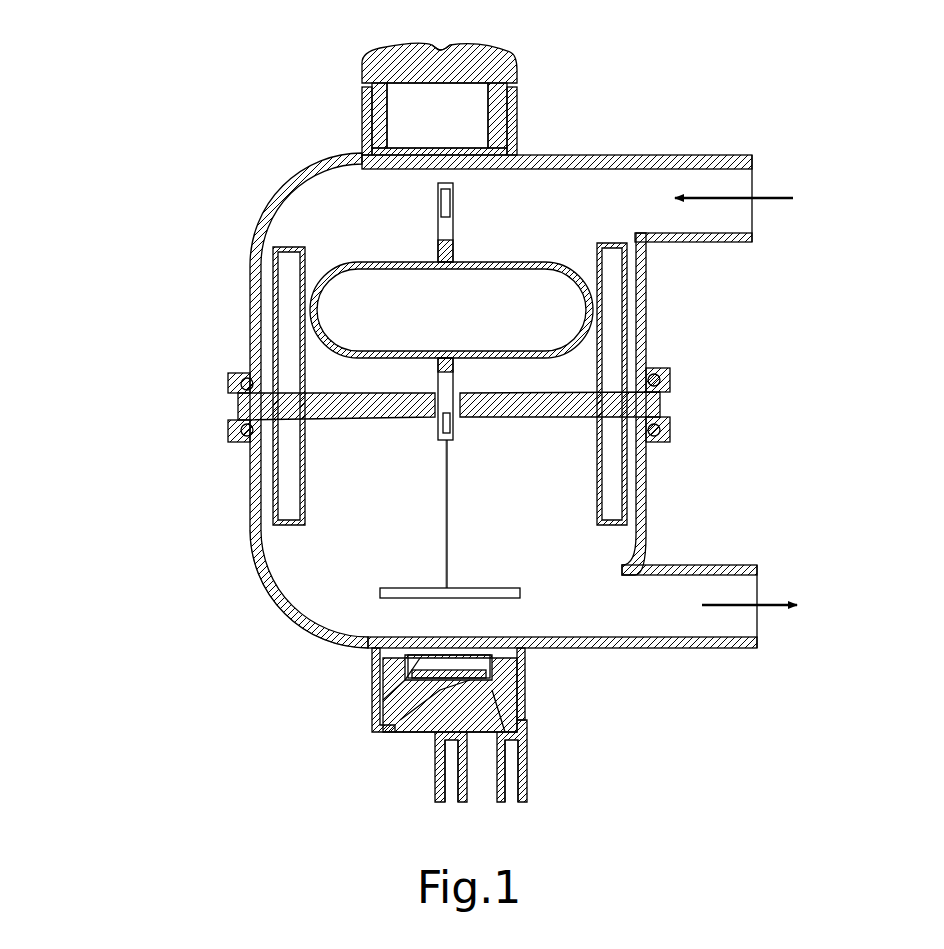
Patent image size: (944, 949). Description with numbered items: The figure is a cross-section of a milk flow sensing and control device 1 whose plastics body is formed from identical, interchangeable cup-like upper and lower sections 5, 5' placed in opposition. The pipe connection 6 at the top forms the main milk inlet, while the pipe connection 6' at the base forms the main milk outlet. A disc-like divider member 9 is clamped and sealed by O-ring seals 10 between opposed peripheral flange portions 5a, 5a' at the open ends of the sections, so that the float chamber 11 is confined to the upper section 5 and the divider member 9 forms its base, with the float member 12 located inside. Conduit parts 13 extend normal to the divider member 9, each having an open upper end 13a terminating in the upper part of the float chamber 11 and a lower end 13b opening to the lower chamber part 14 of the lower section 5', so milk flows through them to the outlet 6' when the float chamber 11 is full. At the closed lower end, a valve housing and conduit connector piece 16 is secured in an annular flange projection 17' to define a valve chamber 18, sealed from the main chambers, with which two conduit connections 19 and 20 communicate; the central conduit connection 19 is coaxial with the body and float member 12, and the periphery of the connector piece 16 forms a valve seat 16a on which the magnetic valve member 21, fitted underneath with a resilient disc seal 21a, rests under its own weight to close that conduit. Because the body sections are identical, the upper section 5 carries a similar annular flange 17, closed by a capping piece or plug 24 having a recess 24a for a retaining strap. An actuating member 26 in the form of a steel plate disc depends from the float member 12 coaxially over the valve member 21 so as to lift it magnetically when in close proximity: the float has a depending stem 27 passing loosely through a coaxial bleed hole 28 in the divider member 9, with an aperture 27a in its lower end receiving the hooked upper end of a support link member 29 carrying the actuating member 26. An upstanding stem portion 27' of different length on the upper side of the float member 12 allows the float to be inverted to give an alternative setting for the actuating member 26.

The sensor and control device 1 is at (325, 660).
The upper section 5 is at (503, 393).
The lower section 5' is at (300, 589).
The peripheral flange portion 5a is at (453, 363).
The peripheral flange portion 5a' is at (457, 446).
The pipe connection 6 is at (714, 171).
The pipe connection 6' is at (709, 635).
The divider member 9 is at (566, 390).
The O-ring seal 10 is at (249, 378).
The float chamber 11 is at (556, 218).
The float member 12 is at (494, 265).
The conduit part 13 is at (278, 312).
The open upper end 13a is at (296, 247).
The lower end 13b is at (280, 527).
The lower chamber part 14 is at (550, 568).
The valve housing and conduit connector piece 16 is at (425, 738).
The valve seat 16a is at (432, 690).
The annular outer concentric flange 17 is at (406, 121).
The annular flange projection 17' is at (423, 690).
The valve chamber 18 is at (388, 732).
The conduit connection 19 is at (450, 780).
The conduit connection 20 is at (510, 785).
The valve member 21 is at (528, 690).
The resilient disc seal 21a is at (512, 740).
The capping piece or plug 24 is at (497, 92).
The recess 24a is at (441, 42).
The actuating member 26 is at (360, 622).
The depending stem 27 is at (419, 411).
The upstanding stem portion 27' is at (409, 222).
The aperture 27a is at (456, 422).
The bleed hole 28 is at (452, 418).
The support link member 29 is at (446, 540).